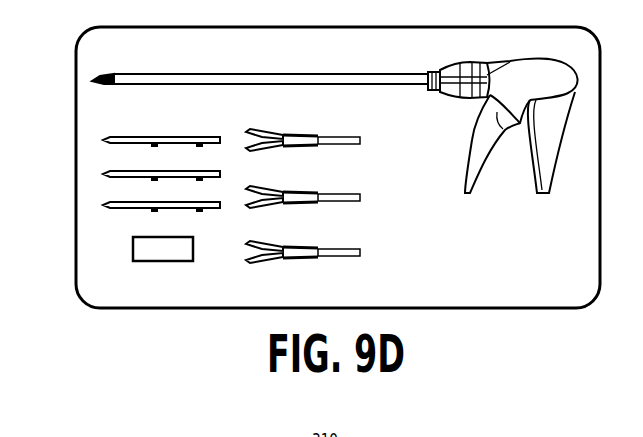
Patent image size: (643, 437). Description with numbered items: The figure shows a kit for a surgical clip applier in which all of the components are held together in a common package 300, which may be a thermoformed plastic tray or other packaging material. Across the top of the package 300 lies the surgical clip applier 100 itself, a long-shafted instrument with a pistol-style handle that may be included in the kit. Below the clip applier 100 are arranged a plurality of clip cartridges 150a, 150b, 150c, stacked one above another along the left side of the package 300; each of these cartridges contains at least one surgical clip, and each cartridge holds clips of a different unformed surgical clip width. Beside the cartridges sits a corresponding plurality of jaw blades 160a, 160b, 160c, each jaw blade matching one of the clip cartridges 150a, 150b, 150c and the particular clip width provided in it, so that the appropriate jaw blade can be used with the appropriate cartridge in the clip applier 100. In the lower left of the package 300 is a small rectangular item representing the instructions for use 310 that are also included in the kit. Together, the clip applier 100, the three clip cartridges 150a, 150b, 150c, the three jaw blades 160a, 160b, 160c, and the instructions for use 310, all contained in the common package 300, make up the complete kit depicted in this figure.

The surgical clip applier 100 is at (525, 60).
The clip cartridge 150a is at (104, 136).
The clip cartridge 150b is at (104, 170).
The clip cartridge 150c is at (104, 201).
The jaw blade 160a is at (352, 136).
The jaw blade 160b is at (352, 192).
The jaw blade 160c is at (352, 248).
The common package 300 is at (134, 309).
The instructions for use 310 is at (134, 240).